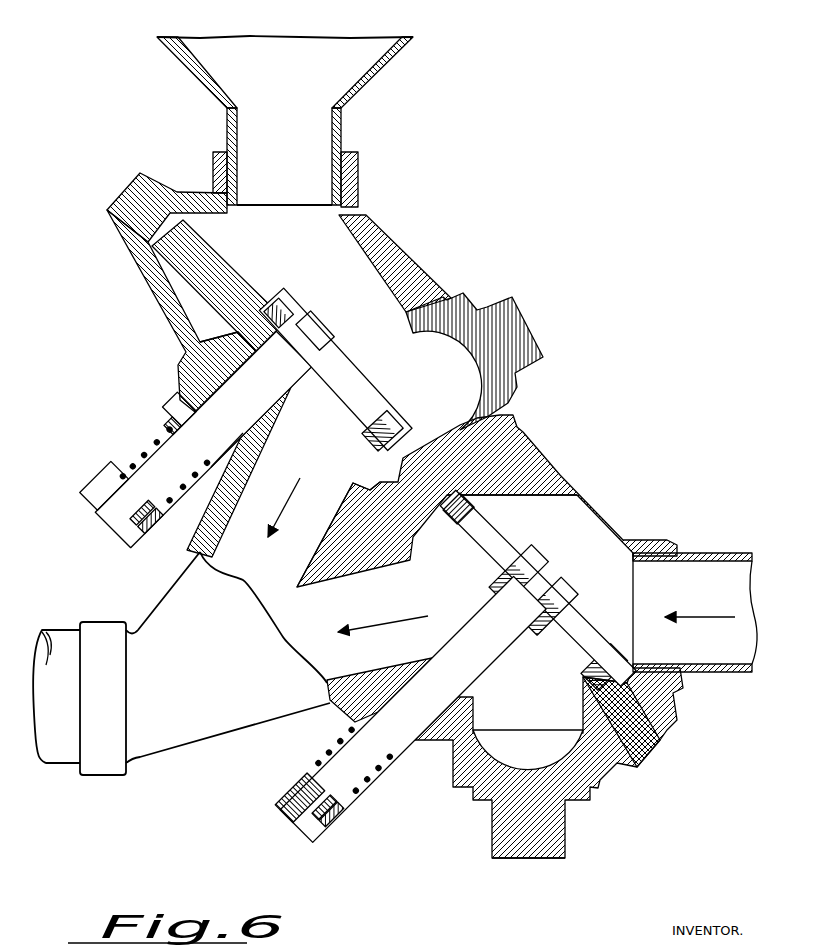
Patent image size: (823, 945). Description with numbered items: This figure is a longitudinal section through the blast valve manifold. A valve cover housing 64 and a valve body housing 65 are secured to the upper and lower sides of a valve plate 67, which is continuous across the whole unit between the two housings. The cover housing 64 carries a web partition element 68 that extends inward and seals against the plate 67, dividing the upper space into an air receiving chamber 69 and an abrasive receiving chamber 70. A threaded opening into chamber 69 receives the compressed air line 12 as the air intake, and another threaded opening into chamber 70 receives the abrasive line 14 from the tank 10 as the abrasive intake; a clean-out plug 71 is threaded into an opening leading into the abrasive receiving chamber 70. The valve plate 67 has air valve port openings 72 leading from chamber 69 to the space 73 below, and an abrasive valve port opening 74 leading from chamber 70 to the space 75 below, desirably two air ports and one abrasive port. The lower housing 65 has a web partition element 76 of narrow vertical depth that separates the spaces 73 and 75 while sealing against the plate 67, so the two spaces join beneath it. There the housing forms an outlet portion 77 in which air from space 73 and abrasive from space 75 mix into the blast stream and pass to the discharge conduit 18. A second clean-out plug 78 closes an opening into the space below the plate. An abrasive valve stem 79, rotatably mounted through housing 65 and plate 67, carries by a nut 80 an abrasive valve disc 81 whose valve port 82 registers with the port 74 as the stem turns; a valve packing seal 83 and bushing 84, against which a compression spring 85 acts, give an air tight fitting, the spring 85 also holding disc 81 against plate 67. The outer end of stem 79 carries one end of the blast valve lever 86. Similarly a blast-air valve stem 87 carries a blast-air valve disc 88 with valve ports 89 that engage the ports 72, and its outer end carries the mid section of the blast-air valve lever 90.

The tank 10 is at (263, 72).
The abrasive line 14 is at (345, 138).
The compressed air line 12 is at (708, 553).
The discharge conduit 18 is at (76, 763).
The valve cover housing 64 is at (408, 250).
The valve body housing 65 is at (140, 292).
The valve plate 67 is at (128, 188).
The web partition element 68 is at (512, 447).
The air receiving chamber 69 is at (586, 555).
The abrasive receiving chamber 70 is at (357, 307).
The clean-out plug 71 is at (525, 327).
The air valve port openings 72 is at (478, 567).
The space 73 is at (431, 636).
The abrasive valve port opening 74 is at (345, 420).
The space 75 is at (313, 516).
The web partition element 76 is at (364, 548).
The outlet portion 77 is at (178, 735).
The second clean-out plug 78 is at (550, 857).
The abrasive valve stem 79 is at (165, 442).
The nut 80 is at (328, 348).
The abrasive valve disc 81 is at (253, 283).
The valve port 82 is at (355, 407).
The valve packing seal 83 is at (200, 368).
The bushing 84 is at (172, 403).
The compression spring 85 is at (163, 424).
The blast valve lever 86 is at (90, 492).
The blast-air valve stem 87 is at (363, 790).
The blast-air valve disc 88 is at (478, 523).
The valve ports 89 is at (490, 553).
The blast-air valve lever 90 is at (287, 795).